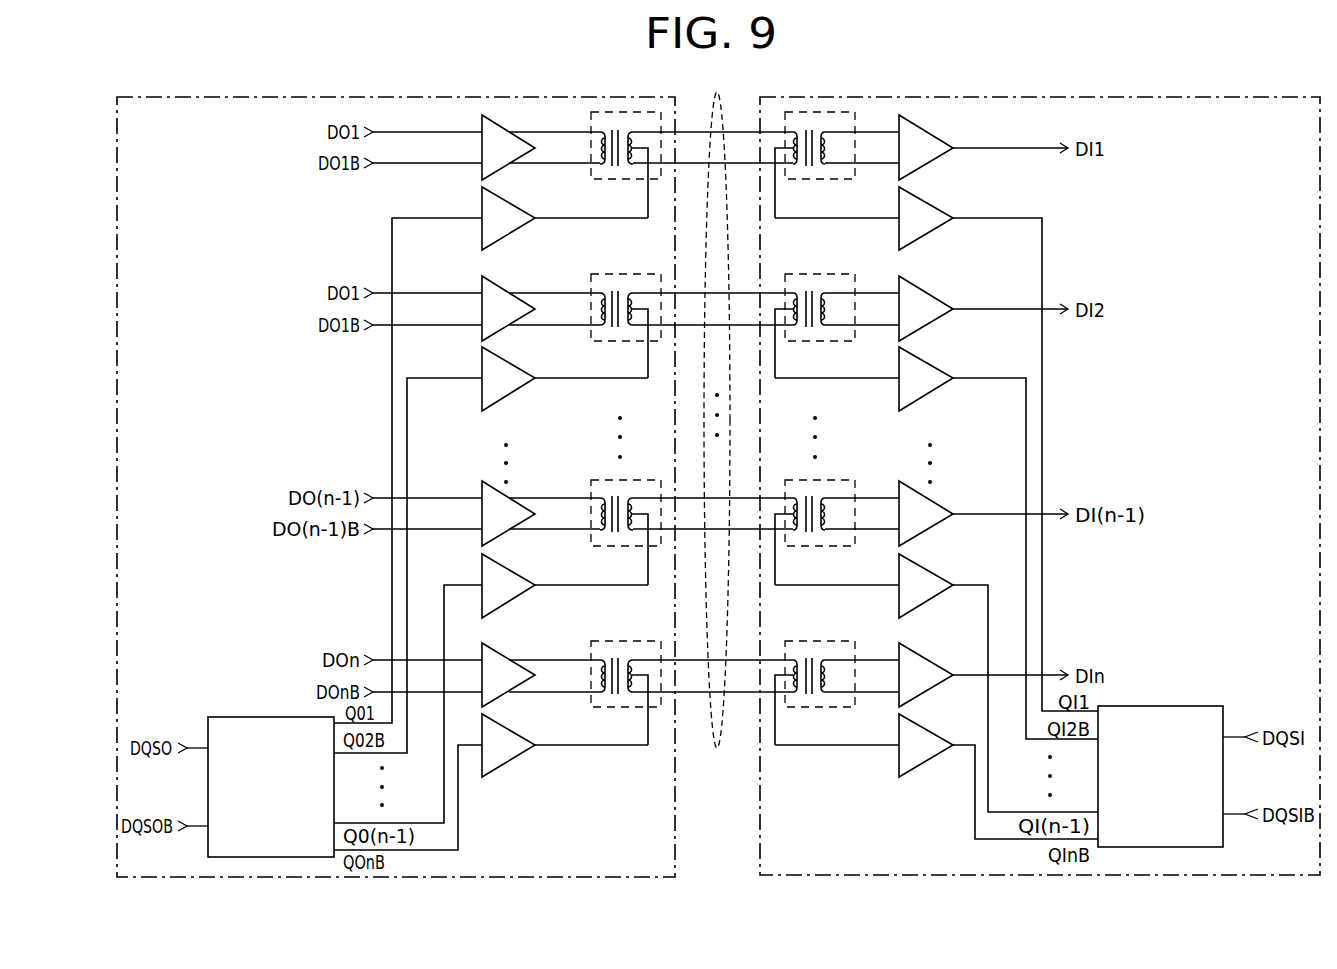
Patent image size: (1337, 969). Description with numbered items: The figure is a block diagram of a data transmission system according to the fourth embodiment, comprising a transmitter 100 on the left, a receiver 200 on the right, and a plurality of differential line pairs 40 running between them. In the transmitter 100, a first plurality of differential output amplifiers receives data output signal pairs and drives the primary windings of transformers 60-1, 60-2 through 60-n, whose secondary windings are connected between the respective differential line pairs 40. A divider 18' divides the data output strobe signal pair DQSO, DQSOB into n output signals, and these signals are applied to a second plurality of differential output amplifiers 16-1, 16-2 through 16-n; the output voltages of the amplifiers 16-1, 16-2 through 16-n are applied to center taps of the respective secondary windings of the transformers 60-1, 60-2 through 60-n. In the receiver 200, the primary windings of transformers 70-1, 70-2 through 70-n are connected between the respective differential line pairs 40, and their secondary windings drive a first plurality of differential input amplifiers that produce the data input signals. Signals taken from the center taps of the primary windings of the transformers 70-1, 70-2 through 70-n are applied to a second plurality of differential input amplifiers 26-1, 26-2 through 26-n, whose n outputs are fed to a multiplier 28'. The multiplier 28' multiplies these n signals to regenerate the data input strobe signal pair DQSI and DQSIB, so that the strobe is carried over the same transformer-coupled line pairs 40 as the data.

The transmitter 100 is at (432, 97).
The receiver 200 is at (1072, 97).
The differential line pairs 40 is at (715, 749).
The differential output amplifier 16-1 is at (508, 233).
The differential output amplifier 16-2 is at (508, 393).
The differential output amplifier 16-n is at (508, 762).
The transformer 60-1 is at (613, 180).
The transformer 60-2 is at (613, 342).
The transformer 60-n is at (613, 708).
The transformer 70-1 is at (836, 180).
The transformer 70-2 is at (836, 342).
The transformer 70-n is at (836, 708).
The differential input amplifier 26-1 is at (926, 233).
The differential input amplifier 26-2 is at (926, 393).
The differential input amplifier 26-n is at (926, 762).
The divider 18' is at (271, 768).
The multiplier 28' is at (1160, 754).